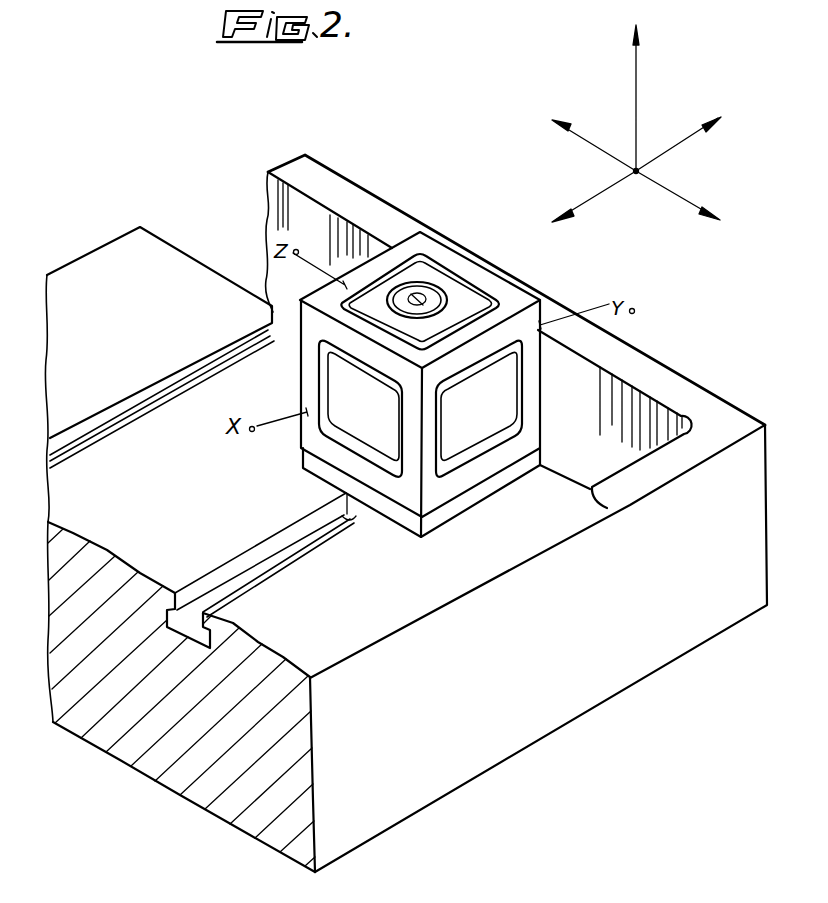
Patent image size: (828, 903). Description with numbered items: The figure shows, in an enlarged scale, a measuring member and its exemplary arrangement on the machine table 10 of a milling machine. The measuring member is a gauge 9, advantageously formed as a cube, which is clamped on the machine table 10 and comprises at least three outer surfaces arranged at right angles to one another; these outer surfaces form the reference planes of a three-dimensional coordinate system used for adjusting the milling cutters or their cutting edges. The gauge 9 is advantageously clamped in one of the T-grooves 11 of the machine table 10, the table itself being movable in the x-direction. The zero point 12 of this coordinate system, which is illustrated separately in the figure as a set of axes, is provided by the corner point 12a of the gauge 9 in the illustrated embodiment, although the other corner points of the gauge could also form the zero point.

The gauge 9 is at (503, 381).
The machine table 10 is at (483, 752).
The T-groove 11 is at (204, 613).
The zero point 12 is at (636, 174).
The corner point 12a is at (419, 371).